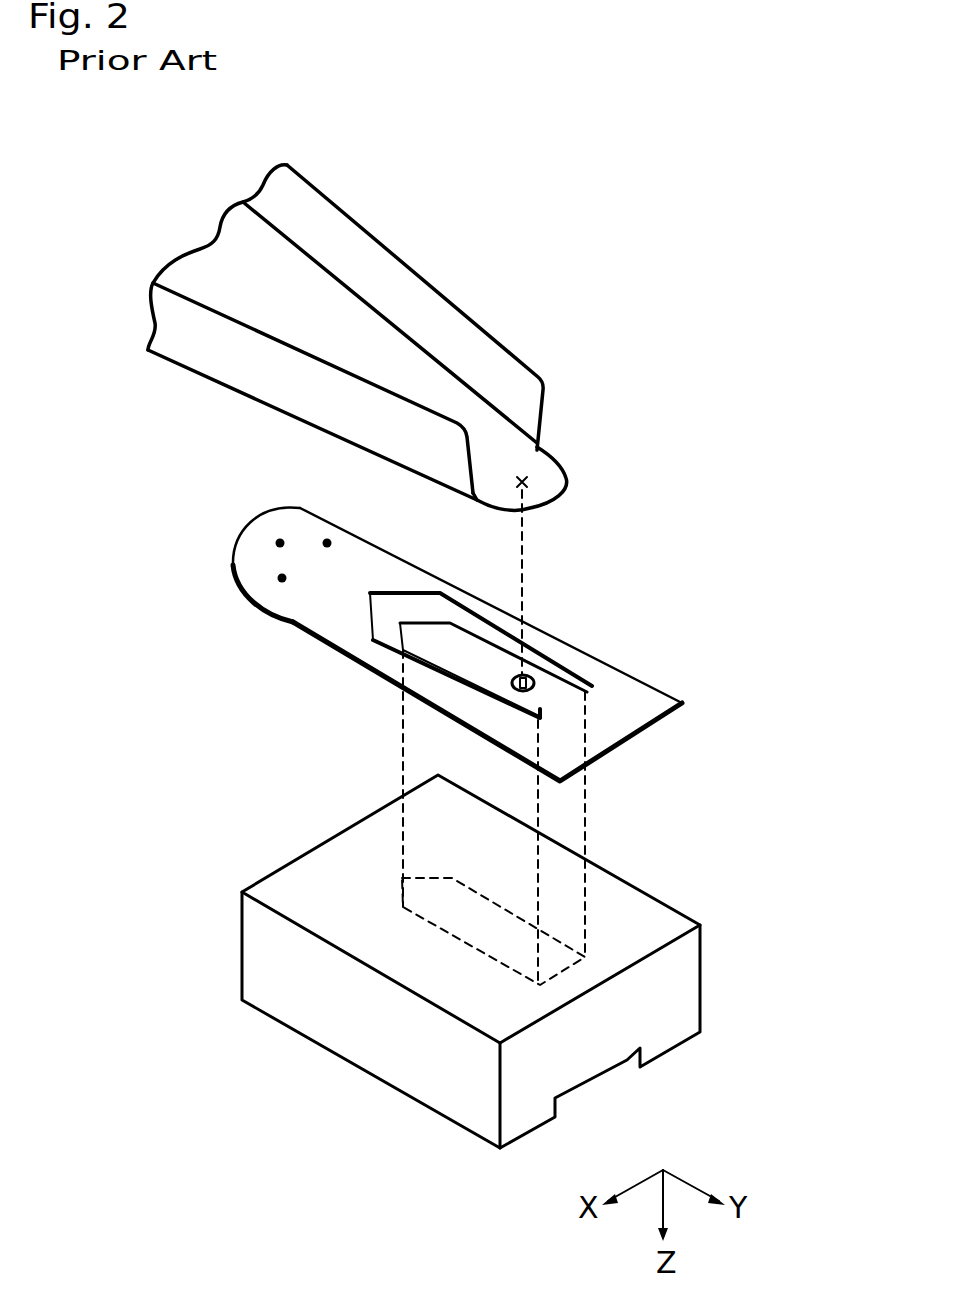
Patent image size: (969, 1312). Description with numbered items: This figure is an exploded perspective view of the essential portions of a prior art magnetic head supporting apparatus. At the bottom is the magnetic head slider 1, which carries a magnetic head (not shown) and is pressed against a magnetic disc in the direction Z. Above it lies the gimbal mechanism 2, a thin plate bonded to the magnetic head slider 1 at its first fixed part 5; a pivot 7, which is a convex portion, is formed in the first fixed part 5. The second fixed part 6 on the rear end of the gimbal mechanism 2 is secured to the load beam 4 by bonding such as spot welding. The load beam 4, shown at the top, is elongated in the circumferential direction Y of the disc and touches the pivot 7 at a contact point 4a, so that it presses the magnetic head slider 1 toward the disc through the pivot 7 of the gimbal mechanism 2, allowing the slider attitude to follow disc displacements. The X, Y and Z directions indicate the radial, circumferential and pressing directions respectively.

The magnetic head slider 1 is at (700, 978).
The gimbal mechanism 2 is at (657, 685).
The load beam 4 is at (543, 407).
The contact point 4a is at (550, 457).
The first fixed part 5 is at (453, 643).
The second fixed part 6 is at (280, 543).
The pivot 7 is at (534, 680).